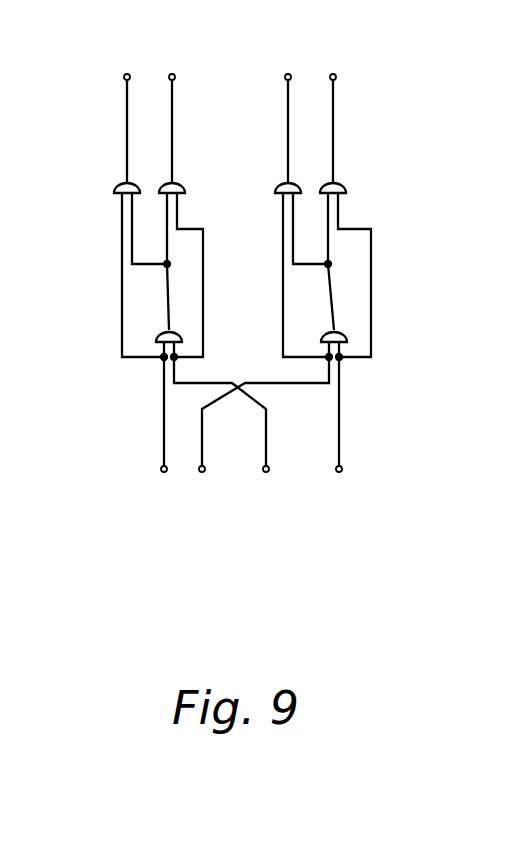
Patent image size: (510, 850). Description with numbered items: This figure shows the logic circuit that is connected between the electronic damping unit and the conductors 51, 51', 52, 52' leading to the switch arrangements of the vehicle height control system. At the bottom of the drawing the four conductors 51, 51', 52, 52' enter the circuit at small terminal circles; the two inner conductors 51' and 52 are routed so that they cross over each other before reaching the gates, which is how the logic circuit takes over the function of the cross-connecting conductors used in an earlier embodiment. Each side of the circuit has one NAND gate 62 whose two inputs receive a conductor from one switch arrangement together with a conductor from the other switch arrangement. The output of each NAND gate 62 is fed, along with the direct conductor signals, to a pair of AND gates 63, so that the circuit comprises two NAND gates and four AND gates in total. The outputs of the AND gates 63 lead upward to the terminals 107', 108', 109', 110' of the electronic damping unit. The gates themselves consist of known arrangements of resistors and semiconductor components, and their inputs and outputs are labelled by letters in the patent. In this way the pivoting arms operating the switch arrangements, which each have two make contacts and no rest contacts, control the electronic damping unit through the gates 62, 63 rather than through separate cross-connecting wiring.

The terminal 107' is at (105, 105).
The terminal 108' is at (174, 105).
The terminal 109' is at (286, 105).
The terminal 110' is at (352, 105).
The AND gate 63 is at (172, 182).
The NAND gate 62 is at (168, 331).
The conductor 51 is at (156, 427).
The conductor 51' is at (260, 427).
The conductor 52 is at (226, 427).
The conductor 52' is at (350, 427).